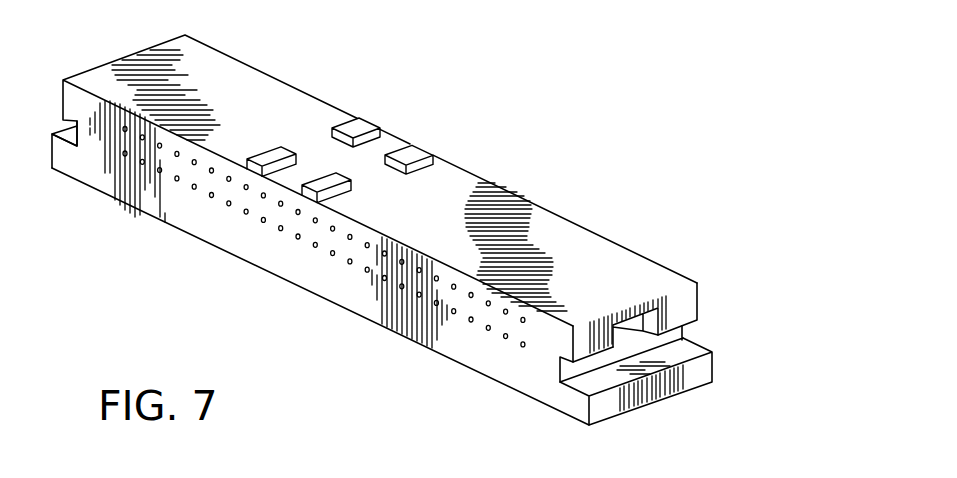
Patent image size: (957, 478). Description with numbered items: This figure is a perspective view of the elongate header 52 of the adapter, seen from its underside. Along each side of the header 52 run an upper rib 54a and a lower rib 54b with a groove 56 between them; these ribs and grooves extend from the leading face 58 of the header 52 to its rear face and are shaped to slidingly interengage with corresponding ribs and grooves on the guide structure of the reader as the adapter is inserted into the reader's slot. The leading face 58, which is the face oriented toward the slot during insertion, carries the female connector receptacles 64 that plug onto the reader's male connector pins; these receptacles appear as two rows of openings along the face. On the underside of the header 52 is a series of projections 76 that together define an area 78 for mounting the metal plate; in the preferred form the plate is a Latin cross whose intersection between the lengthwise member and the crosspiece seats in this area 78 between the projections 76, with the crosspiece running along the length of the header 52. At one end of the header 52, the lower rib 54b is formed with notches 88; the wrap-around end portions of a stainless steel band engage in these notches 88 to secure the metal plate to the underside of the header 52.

The header 52 is at (493, 208).
The upper rib 54a is at (688, 382).
The lower rib 54b is at (688, 300).
The groove 56 is at (560, 366).
The leading face 58 is at (347, 295).
The female connector receptacles 64 is at (296, 237).
The projections 76 is at (327, 180).
The area 78 is at (353, 160).
The notches 88 is at (627, 315).